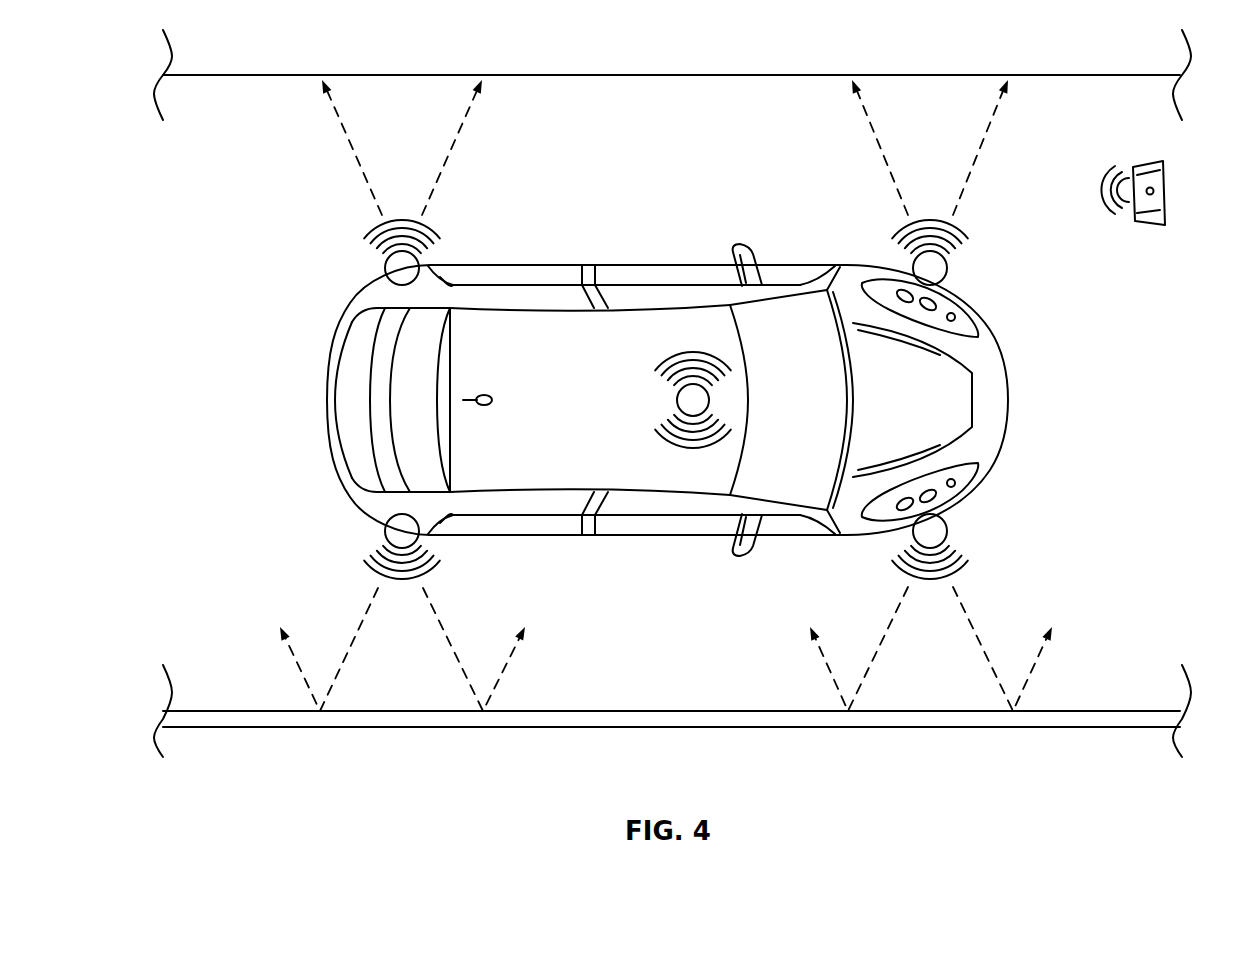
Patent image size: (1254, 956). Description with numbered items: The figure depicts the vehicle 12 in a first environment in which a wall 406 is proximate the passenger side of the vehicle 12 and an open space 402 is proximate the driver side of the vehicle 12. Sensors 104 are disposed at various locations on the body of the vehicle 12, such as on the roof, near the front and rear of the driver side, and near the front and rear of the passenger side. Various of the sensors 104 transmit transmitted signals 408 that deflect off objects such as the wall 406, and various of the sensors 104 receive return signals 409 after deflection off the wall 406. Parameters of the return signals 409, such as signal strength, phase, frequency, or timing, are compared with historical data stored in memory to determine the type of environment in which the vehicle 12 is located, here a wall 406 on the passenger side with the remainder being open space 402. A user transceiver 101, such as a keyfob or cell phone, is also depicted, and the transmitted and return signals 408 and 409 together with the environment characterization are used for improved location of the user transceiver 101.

The vehicle 12 is at (1025, 495).
The user transceiver 101 is at (1167, 193).
The sensors 104 is at (385, 266).
The open space 402 is at (688, 156).
The wall 406 is at (665, 717).
The transmitted signals 408 is at (380, 236).
The return signals 409 is at (670, 438).